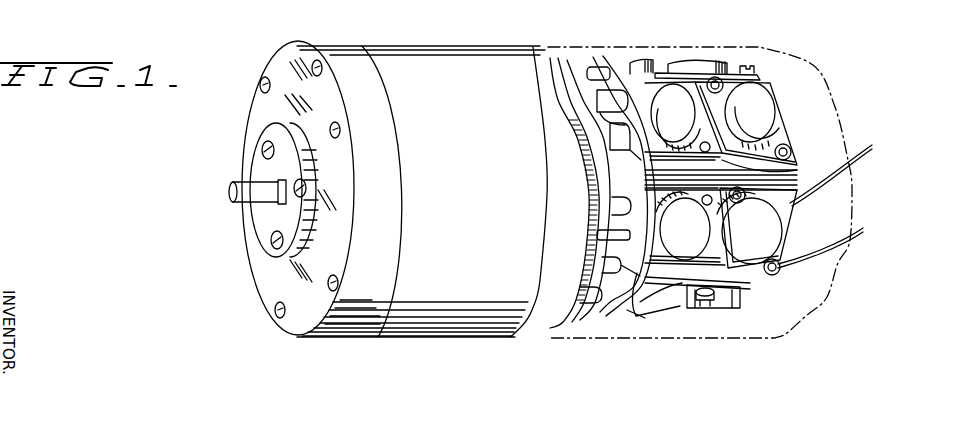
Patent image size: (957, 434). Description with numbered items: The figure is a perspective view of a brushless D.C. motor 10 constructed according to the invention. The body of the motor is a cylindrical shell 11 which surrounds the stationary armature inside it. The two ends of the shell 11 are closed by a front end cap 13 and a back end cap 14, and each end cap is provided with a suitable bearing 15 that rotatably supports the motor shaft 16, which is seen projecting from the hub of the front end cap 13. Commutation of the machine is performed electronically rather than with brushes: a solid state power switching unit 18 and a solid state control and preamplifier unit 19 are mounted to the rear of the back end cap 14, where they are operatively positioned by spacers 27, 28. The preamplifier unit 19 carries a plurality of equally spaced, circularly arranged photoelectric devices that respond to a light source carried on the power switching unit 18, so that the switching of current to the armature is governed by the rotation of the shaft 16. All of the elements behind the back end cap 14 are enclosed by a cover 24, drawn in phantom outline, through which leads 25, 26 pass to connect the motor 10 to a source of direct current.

The brushless D.C. motor 10 is at (658, 29).
The shell 11 is at (437, 333).
The front end cap 13 is at (340, 333).
The back end cap 14 is at (522, 335).
The bearing 15 is at (284, 217).
The motor shaft 16 is at (233, 197).
The solid state power switching unit 18 is at (668, 62).
The solid state control and preamplifier unit 19 is at (587, 50).
The cover 24 is at (837, 108).
The lead 25 is at (818, 182).
The lead 26 is at (807, 262).
The spacer 27 is at (590, 238).
The spacer 28 is at (634, 271).